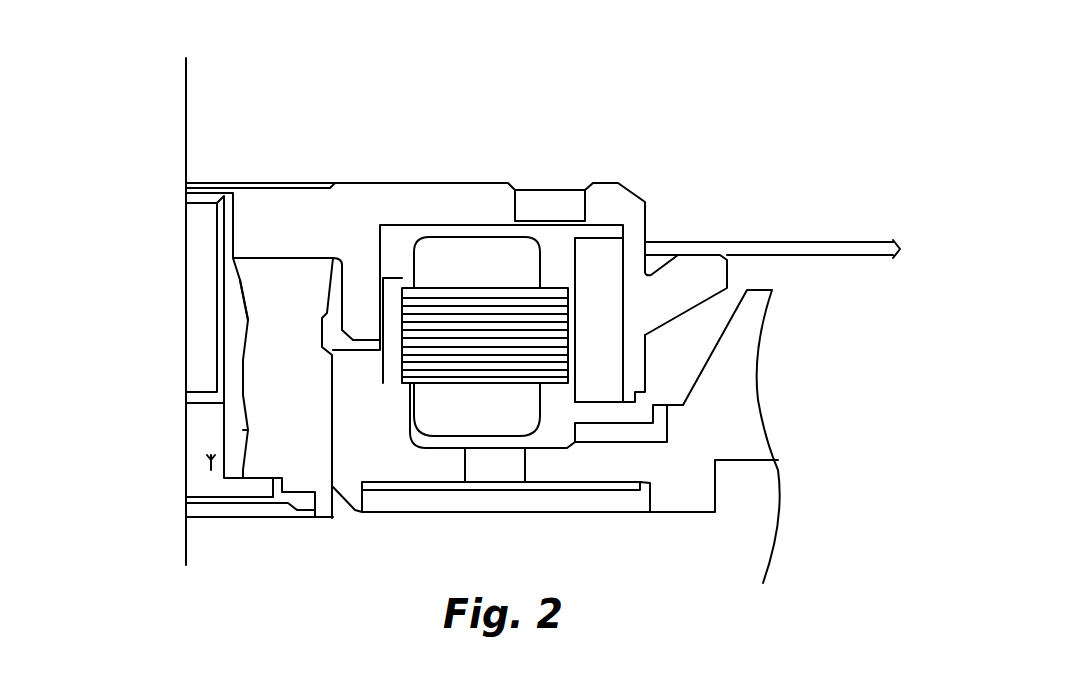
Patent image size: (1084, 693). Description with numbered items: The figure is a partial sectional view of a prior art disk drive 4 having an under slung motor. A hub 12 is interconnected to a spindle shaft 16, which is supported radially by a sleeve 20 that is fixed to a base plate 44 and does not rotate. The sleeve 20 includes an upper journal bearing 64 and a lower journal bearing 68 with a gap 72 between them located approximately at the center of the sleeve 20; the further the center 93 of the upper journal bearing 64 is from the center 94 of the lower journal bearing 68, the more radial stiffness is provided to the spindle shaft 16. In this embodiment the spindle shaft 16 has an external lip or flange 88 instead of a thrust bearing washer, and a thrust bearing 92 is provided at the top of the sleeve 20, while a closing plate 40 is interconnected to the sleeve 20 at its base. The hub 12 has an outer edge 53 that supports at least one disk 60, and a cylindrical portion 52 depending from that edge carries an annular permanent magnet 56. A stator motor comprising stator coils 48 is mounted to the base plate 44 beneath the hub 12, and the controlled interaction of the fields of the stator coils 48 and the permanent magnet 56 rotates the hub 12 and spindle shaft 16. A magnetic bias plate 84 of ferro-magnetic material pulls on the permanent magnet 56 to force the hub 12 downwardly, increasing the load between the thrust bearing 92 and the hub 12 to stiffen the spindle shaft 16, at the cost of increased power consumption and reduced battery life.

The disk drive 4 is at (261, 143).
The hub 12 is at (395, 208).
The spindle shaft 16 is at (230, 462).
The sleeve 20 is at (318, 443).
The closing plate 40 is at (283, 505).
The base plate 44 is at (733, 357).
The stator coils 48 is at (517, 370).
The cylindrical portion 52 is at (632, 278).
The outer edge 53 is at (647, 217).
The permanent magnet 56 is at (602, 388).
The disk 60 is at (792, 245).
The upper journal bearing 64 is at (260, 275).
The lower journal bearing 68 is at (257, 403).
The gap 72 is at (243, 382).
The magnetic bias plate 84 is at (662, 433).
The external lip or flange 88 is at (245, 488).
The thrust bearing 92 is at (325, 258).
The center of the upper journal bearing 93 is at (243, 303).
The center of the lower journal bearing 94 is at (260, 432).